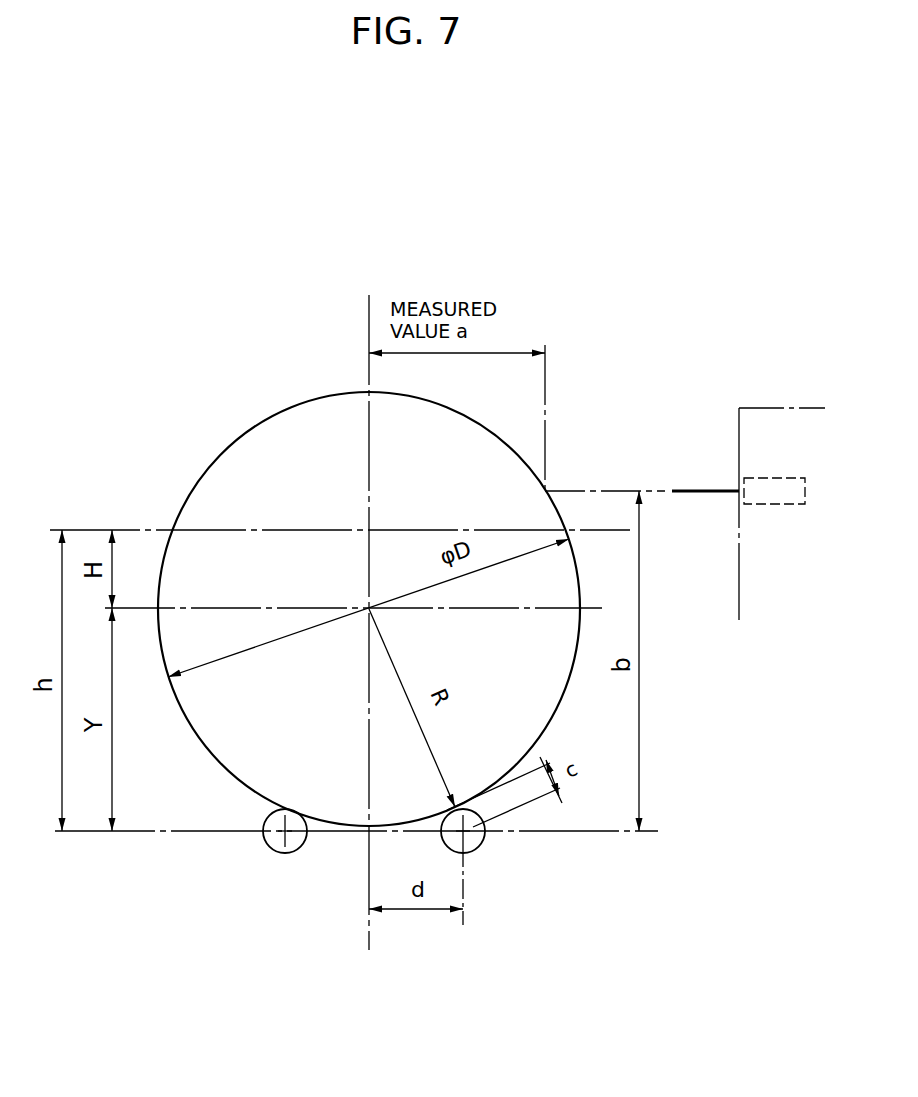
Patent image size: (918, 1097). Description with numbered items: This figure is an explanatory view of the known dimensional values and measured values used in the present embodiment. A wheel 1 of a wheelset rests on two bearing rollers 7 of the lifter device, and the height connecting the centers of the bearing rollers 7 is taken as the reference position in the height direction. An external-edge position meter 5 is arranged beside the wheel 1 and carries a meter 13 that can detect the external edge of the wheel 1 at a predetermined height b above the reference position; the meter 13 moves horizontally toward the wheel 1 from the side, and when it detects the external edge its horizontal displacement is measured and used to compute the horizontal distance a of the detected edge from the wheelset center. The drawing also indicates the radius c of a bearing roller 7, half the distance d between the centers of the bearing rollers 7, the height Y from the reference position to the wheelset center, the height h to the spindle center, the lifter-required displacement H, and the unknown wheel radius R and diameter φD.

The wheel 1 is at (250, 435).
The external-edge position meter 5 is at (779, 388).
The bearing roller 7 is at (277, 849).
The meter 13 is at (716, 443).